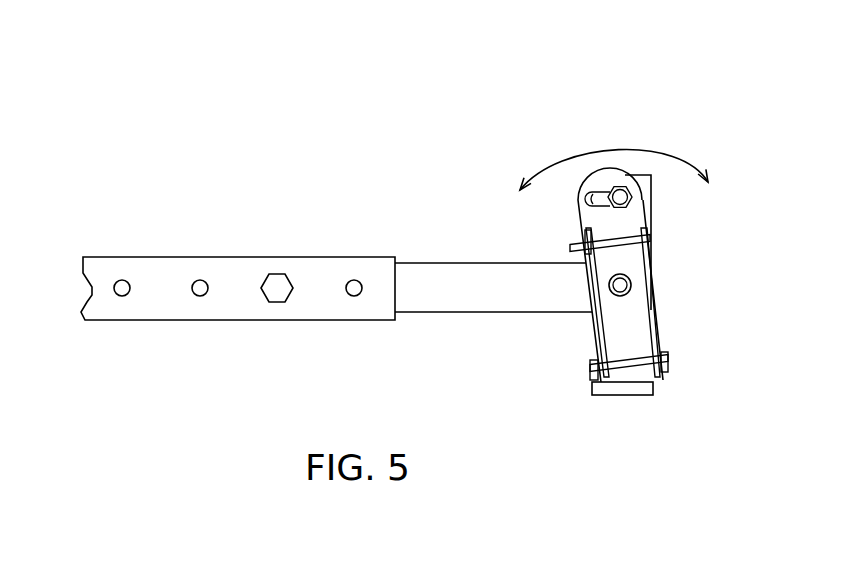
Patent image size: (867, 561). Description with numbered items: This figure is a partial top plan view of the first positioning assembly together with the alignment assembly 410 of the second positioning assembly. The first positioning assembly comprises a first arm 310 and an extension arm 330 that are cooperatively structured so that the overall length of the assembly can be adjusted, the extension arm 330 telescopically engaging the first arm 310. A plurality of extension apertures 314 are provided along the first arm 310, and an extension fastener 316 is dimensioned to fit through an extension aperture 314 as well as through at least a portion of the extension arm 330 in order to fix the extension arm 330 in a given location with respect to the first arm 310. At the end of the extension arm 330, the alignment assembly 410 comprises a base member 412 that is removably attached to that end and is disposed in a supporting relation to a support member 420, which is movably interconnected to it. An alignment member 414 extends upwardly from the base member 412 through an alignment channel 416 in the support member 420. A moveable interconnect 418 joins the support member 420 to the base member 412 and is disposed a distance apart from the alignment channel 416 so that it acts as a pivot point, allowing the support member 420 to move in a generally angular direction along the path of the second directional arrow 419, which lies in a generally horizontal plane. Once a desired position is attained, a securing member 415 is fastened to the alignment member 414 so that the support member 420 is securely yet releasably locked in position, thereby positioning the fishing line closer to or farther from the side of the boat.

The first arm 310 is at (179, 263).
The extension apertures 314 is at (120, 281).
The extension fastener 316 is at (275, 273).
The extension arm 330 is at (452, 297).
The alignment assembly 410 is at (667, 259).
The base member 412 is at (647, 375).
The alignment member 414 is at (628, 200).
The securing member 415 is at (636, 224).
The alignment channel 416 is at (580, 212).
The moveable interconnect 418 is at (620, 285).
The second directional arrow 419 is at (645, 148).
The support member 420 is at (598, 330).